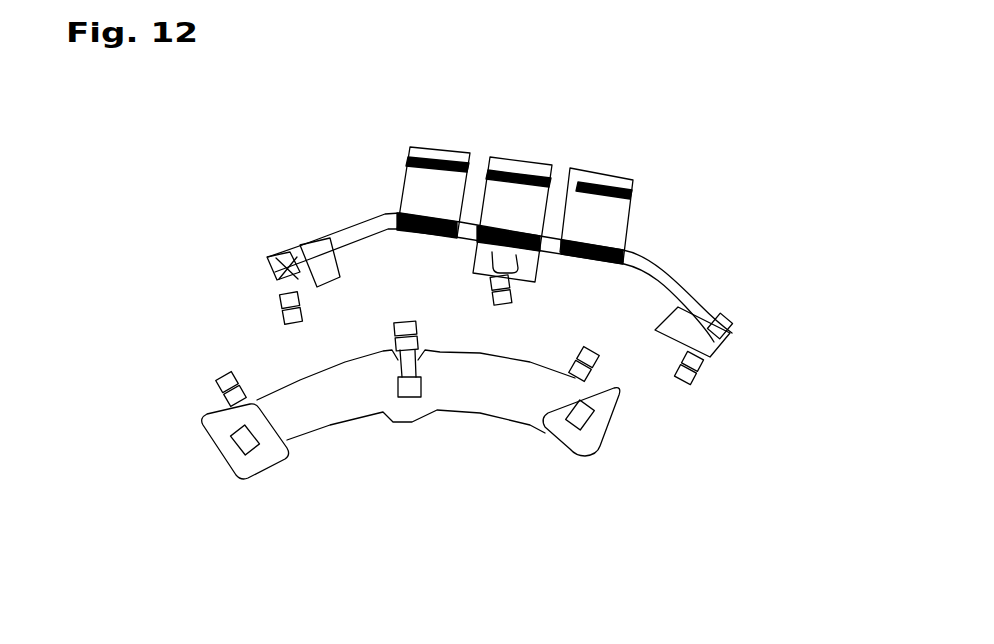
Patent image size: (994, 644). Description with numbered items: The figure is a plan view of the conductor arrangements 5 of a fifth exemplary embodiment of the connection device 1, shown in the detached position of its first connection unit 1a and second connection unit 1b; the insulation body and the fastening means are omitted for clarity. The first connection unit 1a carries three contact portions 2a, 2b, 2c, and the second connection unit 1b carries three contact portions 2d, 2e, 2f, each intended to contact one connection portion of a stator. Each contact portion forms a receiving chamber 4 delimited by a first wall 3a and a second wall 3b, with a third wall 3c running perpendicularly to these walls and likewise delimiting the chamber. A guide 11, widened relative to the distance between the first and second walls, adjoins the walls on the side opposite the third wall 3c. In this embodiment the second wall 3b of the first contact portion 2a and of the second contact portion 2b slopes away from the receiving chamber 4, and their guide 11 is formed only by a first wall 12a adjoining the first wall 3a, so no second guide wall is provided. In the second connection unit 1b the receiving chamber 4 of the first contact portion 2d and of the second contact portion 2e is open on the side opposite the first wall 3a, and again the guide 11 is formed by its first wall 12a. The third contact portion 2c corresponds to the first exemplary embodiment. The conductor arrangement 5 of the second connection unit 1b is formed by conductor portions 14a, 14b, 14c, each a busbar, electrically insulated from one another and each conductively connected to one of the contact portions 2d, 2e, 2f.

The connection device 1 is at (808, 72).
The first connection unit 1a is at (205, 325).
The second connection unit 1b is at (690, 195).
The first contact portion 2a is at (205, 400).
The second contact portion 2b is at (608, 383).
The third contact portion 2c is at (425, 336).
The first contact portion 2d is at (308, 290).
The second contact portion 2e is at (692, 382).
The contact portion 2f is at (486, 287).
The first wall 3a is at (290, 245).
The second wall 3b is at (265, 440).
The third wall 3c is at (275, 279).
The receiving chamber 4 is at (273, 285).
The conductor arrangement 5 is at (432, 73).
The guide 11 is at (212, 395).
The first wall of the guide 12a is at (218, 413).
The conductor portion 14a is at (438, 160).
The conductor portion 14b is at (521, 170).
The conductor portion 14c is at (602, 182).